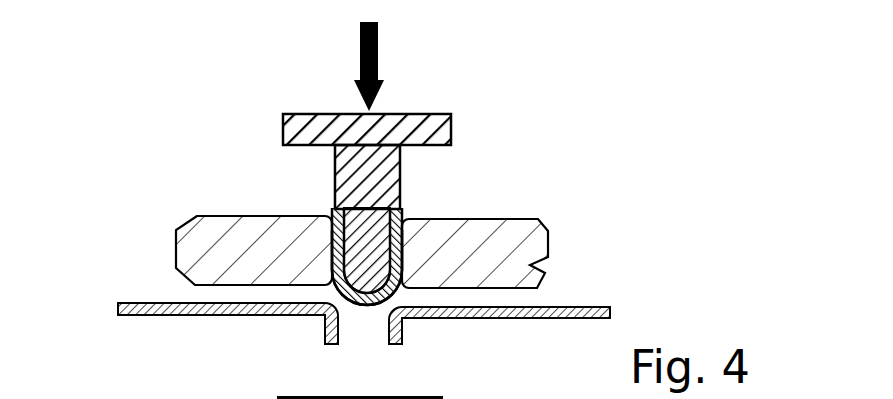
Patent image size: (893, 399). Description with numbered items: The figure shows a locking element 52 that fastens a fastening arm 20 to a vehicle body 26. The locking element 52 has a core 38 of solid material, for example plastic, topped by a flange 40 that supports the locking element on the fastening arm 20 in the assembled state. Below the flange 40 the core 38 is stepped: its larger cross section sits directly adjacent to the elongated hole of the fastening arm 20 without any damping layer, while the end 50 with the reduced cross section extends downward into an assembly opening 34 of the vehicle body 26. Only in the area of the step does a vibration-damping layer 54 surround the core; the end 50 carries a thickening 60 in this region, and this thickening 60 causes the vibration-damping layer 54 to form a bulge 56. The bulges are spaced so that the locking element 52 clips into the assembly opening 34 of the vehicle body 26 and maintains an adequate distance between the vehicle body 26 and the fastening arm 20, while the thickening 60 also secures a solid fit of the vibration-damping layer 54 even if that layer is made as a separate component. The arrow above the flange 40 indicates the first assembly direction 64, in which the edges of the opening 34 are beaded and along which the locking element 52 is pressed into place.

The fastening arm 20 is at (530, 265).
The vehicle body 26 is at (593, 307).
The assembly opening 34 is at (365, 332).
The core 38 is at (335, 167).
The flange 40 is at (453, 113).
The end with smaller cross section 50 is at (403, 217).
The locking element 52 is at (233, 115).
The vibration-damping layer 54 is at (337, 248).
The bulge 56 is at (333, 214).
The thickening 60 is at (402, 202).
The first assembly direction 64 is at (380, 63).